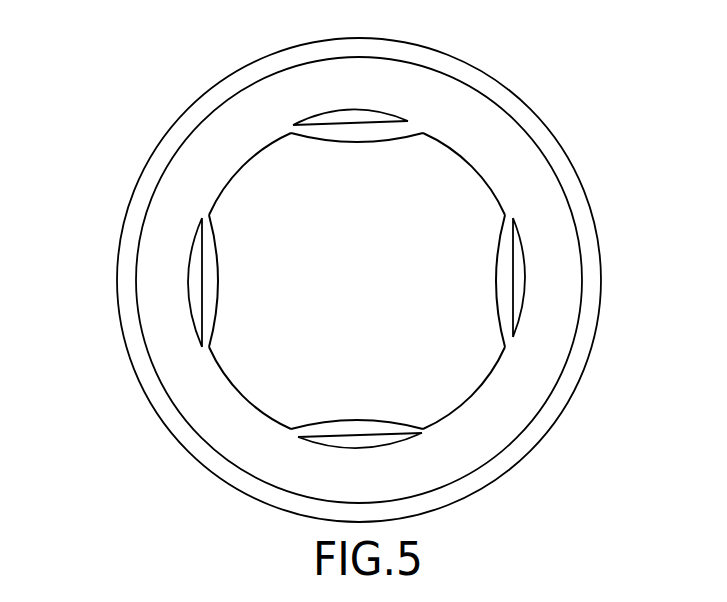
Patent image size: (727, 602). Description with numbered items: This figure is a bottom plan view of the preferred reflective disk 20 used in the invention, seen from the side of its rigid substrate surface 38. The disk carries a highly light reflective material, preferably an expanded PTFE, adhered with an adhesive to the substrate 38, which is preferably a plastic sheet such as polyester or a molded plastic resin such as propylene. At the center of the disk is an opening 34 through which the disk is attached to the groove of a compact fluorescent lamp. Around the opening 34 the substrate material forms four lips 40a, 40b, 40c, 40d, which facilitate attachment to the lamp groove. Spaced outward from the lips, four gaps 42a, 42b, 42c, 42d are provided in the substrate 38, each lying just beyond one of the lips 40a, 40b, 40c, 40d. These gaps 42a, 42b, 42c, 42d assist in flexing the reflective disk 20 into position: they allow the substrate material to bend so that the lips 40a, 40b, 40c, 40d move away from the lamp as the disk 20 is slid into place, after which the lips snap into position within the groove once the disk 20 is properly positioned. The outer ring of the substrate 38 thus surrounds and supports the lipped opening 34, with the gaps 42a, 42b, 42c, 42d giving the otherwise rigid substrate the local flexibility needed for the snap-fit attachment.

The reflective disk 20 is at (633, 97).
The opening 34 is at (245, 402).
The substrate surface 38 is at (528, 384).
The lip 40a is at (493, 274).
The lip 40b is at (358, 142).
The lip 40c is at (227, 277).
The lip 40d is at (358, 416).
The gap 42a is at (521, 279).
The gap 42b is at (388, 113).
The gap 42c is at (189, 282).
The gap 42d is at (338, 447).